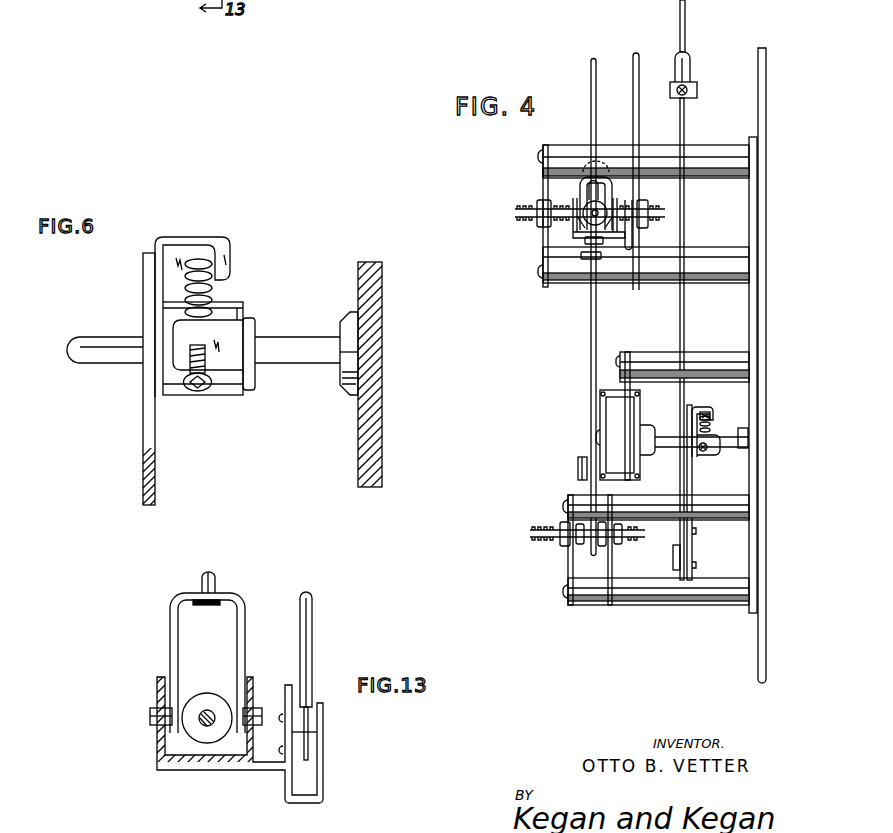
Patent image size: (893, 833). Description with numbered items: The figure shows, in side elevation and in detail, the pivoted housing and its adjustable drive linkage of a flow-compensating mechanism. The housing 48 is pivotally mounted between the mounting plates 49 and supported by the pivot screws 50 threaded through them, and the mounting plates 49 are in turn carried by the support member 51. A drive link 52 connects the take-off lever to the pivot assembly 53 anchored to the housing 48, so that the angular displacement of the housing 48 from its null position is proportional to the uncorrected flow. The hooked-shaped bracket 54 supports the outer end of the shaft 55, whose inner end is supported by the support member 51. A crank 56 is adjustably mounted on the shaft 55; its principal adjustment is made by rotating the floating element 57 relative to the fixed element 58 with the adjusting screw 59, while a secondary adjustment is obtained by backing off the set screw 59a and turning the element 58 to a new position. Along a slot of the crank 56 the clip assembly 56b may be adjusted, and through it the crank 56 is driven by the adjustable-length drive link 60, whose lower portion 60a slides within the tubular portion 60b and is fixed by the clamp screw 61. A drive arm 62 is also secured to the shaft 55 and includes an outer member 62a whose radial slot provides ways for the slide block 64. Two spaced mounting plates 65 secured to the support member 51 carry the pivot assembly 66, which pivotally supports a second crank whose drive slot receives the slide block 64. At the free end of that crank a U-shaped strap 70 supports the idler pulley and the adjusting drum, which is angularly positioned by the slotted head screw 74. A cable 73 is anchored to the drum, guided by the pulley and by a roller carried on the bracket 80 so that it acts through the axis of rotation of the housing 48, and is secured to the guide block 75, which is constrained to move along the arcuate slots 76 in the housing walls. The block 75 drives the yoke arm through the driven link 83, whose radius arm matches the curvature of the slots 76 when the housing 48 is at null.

In FIG. 13, the housing 48 is at (157, 693).
In FIG. 4, the mounting plate 49 is at (543, 180).
In FIG. 4, the pivot screw 50 is at (520, 215).
In FIG. 4, the support member 51 is at (758, 70).
In FIG. 6, the support member 51 is at (358, 282).
In FIG. 4, the drive link 52 is at (640, 68).
In FIG. 13, the drive link 52 is at (312, 645).
In FIG. 4, the pivot assembly 53 is at (628, 252).
In FIG. 13, the pivot assembly 53 is at (322, 770).
In FIG. 4, the hooked-shaped bracket 54 is at (628, 355).
In FIG. 4, the shaft 55 is at (730, 448).
In FIG. 6, the shaft 55 is at (128, 360).
In FIG. 4, the crank 56 is at (705, 520).
In FIG. 6, the crank 56 is at (148, 320).
In FIG. 4, the clip assembly 56b is at (683, 570).
In FIG. 4, the floating element 57 is at (699, 408).
In FIG. 6, the floating element 57 is at (200, 236).
In FIG. 4, the fixed element 58 is at (705, 458).
In FIG. 6, the fixed element 58 is at (236, 348).
In FIG. 4, the adjusting screw 59 is at (709, 418).
In FIG. 6, the adjusting screw 59 is at (210, 362).
In FIG. 6, the set screw 59a is at (195, 394).
In FIG. 4, the adjustable-length drive link 60 is at (696, 290).
In FIG. 4, the lower portion 60a is at (688, 216).
In FIG. 4, the tubular portion 60b is at (690, 70).
In FIG. 4, the clamp screw 61 is at (676, 99).
In FIG. 4, the drive arm 62 is at (604, 435).
In FIG. 4, the outer member 62a is at (600, 414).
In FIG. 4, the slide block 64 is at (578, 462).
In FIG. 4, the mounting plate 65 is at (568, 572).
In FIG. 4, the pivot assembly 66 is at (560, 540).
In FIG. 4, the U-shaped strap 70 is at (593, 262).
In FIG. 4, the cable 73 is at (590, 248).
In FIG. 13, the cable 73 is at (210, 712).
In FIG. 4, the slotted head screw 74 is at (585, 258).
In FIG. 4, the guide block 75 is at (578, 190).
In FIG. 13, the guide block 75 is at (197, 703).
In FIG. 13, the arcuate slot 76 is at (150, 718).
In FIG. 4, the bracket 80 is at (578, 222).
In FIG. 4, the driven link 83 is at (597, 70).
In FIG. 13, the driven link 83 is at (216, 585).